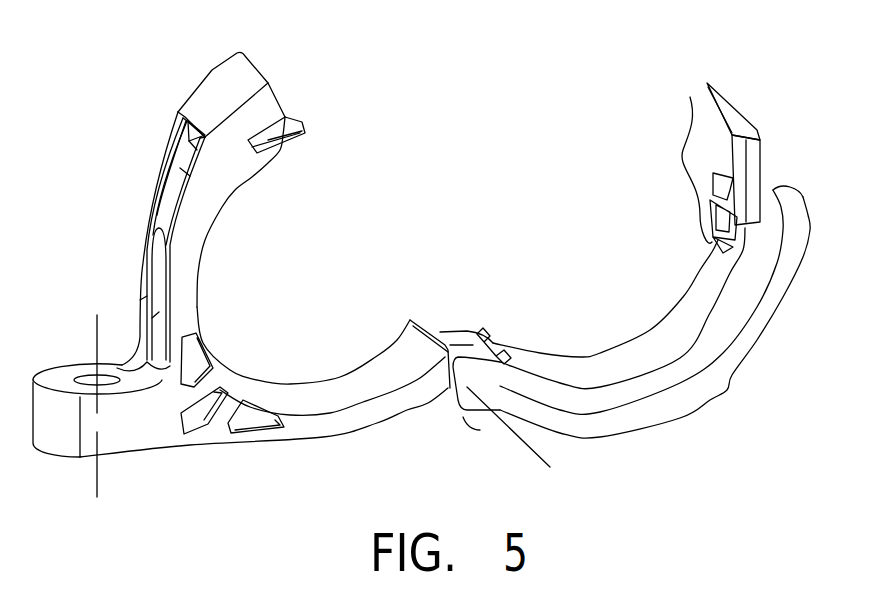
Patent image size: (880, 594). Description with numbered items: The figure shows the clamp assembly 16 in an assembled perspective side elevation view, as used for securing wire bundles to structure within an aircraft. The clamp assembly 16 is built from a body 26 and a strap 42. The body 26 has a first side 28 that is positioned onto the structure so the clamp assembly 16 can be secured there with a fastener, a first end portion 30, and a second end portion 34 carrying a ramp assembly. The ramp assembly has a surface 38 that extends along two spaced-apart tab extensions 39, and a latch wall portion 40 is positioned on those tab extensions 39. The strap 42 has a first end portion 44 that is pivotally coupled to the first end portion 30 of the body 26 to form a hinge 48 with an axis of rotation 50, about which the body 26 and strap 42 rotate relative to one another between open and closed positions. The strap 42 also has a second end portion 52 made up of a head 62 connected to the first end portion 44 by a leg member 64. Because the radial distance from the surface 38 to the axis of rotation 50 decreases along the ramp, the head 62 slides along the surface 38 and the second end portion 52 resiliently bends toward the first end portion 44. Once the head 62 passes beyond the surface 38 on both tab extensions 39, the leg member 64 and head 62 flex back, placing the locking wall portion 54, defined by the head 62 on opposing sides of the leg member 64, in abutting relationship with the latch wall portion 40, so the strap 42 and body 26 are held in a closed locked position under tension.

The clamp assembly 16 is at (624, 83).
The body 26 is at (142, 236).
The first side 28 is at (173, 450).
The first end portion 30 is at (434, 331).
The second end portion 34 is at (209, 69).
The surface 38 is at (192, 155).
The tab extension 39 is at (187, 141).
The latch wall portion 40 is at (178, 125).
The strap 42 is at (662, 443).
The first end portion 44 is at (700, 402).
The hinge 48 is at (448, 312).
The axis of rotation 50 is at (527, 448).
The second end portion 52 is at (700, 183).
The locking wall portion 54 is at (762, 152).
The head 62 is at (740, 108).
The leg member 64 is at (760, 175).